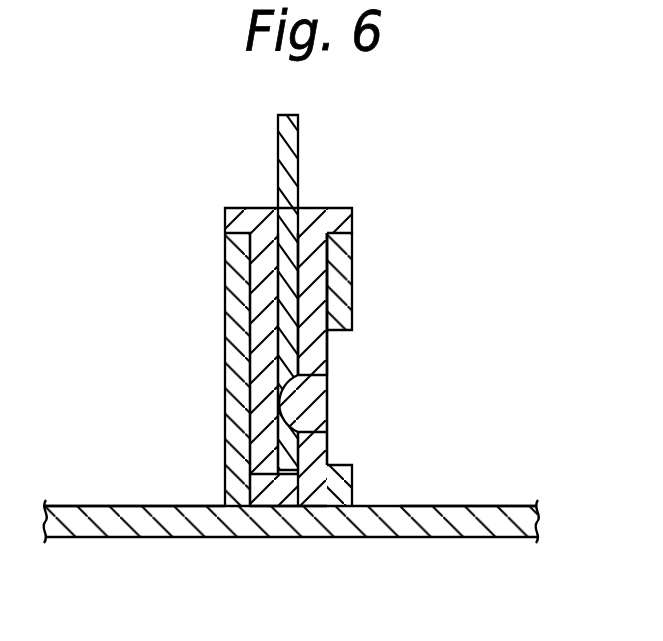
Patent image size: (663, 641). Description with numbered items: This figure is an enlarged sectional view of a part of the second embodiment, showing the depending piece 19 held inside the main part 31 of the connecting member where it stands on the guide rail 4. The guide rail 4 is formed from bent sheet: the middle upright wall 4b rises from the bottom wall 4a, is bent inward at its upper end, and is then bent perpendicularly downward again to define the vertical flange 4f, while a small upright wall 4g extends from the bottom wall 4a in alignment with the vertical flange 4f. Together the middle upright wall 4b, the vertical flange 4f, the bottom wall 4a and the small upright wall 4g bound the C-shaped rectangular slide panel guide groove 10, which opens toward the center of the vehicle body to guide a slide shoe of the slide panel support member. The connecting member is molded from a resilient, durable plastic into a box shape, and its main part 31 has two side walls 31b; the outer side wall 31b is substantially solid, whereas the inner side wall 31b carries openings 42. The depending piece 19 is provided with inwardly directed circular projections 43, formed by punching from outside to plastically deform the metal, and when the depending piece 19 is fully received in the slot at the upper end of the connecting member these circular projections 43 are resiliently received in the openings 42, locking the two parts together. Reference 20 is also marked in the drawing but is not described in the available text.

The guide rail 4 is at (150, 550).
The bottom wall 4a is at (472, 530).
The middle upright wall 4b is at (232, 452).
The vertical flange 4f is at (342, 253).
The small upright wall 4g is at (345, 477).
The slide panel guide groove 10 is at (252, 488).
The depending piece 19 is at (278, 176).
The hole 20 is at (316, 240).
The main part 31 is at (250, 298).
The side wall 31b is at (319, 286).
The opening 42 is at (313, 383).
The circular projection 43 is at (300, 398).